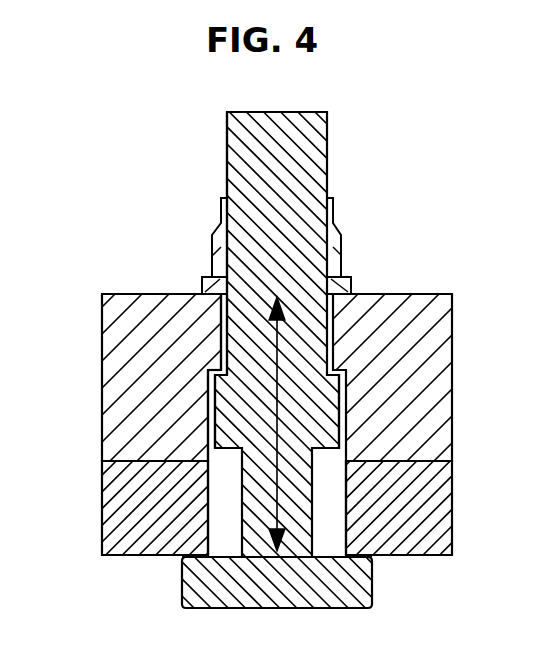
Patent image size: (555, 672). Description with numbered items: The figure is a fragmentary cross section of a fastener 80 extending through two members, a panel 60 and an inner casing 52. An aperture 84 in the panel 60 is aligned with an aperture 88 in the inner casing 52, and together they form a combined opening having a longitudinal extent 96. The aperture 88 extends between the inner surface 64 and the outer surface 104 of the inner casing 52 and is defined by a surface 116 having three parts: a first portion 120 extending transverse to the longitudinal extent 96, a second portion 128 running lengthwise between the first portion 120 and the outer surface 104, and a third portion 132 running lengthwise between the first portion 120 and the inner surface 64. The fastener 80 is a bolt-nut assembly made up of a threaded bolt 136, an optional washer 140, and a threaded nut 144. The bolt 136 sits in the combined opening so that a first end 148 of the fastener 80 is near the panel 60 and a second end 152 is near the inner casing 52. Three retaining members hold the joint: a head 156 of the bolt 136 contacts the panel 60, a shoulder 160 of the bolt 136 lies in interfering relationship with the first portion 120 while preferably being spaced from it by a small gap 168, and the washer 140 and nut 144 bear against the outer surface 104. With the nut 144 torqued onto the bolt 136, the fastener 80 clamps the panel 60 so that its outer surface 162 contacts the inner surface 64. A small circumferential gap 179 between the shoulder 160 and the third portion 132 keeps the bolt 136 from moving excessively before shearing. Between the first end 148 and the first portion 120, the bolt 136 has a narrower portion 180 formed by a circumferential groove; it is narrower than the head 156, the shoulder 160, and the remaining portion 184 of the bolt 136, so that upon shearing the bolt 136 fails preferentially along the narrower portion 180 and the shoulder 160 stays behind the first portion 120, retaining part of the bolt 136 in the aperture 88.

The fastener 80 is at (363, 128).
The second end 152 is at (284, 112).
The threaded bolt 136 is at (266, 167).
The remaining portion 184 is at (227, 137).
The shoulder 160 is at (206, 414).
The surface 116 is at (212, 423).
The first end 148 is at (262, 609).
The head 156 is at (329, 609).
The inner casing 52 is at (432, 326).
The outer surface 104 is at (412, 294).
The second portion 128 is at (221, 304).
The first portion 120 is at (219, 366).
The gap 168 is at (212, 377).
The longitudinal extent 96 is at (210, 443).
The circumferential gap 179 is at (366, 423).
The panel 60 is at (139, 538).
The aperture 84 is at (124, 530).
The aperture 88 is at (200, 479).
The third portion 132 is at (205, 469).
The inner surface 64 is at (408, 460).
The outer surface 162 is at (440, 452).
The narrower portion 180 is at (314, 501).
The threaded nut 144 is at (335, 236).
The washer 140 is at (351, 277).